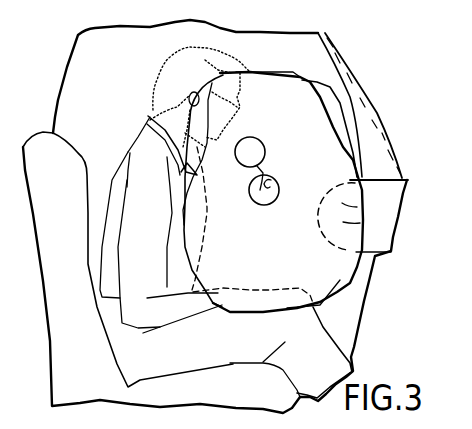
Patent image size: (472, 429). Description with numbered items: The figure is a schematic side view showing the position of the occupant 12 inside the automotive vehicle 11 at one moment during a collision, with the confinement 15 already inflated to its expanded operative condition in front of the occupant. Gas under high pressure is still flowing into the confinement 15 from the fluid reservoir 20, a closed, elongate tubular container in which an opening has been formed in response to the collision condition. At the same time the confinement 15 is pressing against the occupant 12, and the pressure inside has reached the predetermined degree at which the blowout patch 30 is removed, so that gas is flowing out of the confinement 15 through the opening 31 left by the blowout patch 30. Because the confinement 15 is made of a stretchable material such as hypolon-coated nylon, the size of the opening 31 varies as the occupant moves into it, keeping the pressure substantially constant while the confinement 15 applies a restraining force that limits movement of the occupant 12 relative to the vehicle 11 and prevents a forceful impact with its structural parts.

The automotive vehicle 11 is at (383, 123).
The occupant 12 is at (130, 152).
The confinement 15 is at (312, 55).
The fluid reservoir 20 is at (366, 214).
The blowout patch 30 is at (256, 143).
The opening 31 is at (271, 180).